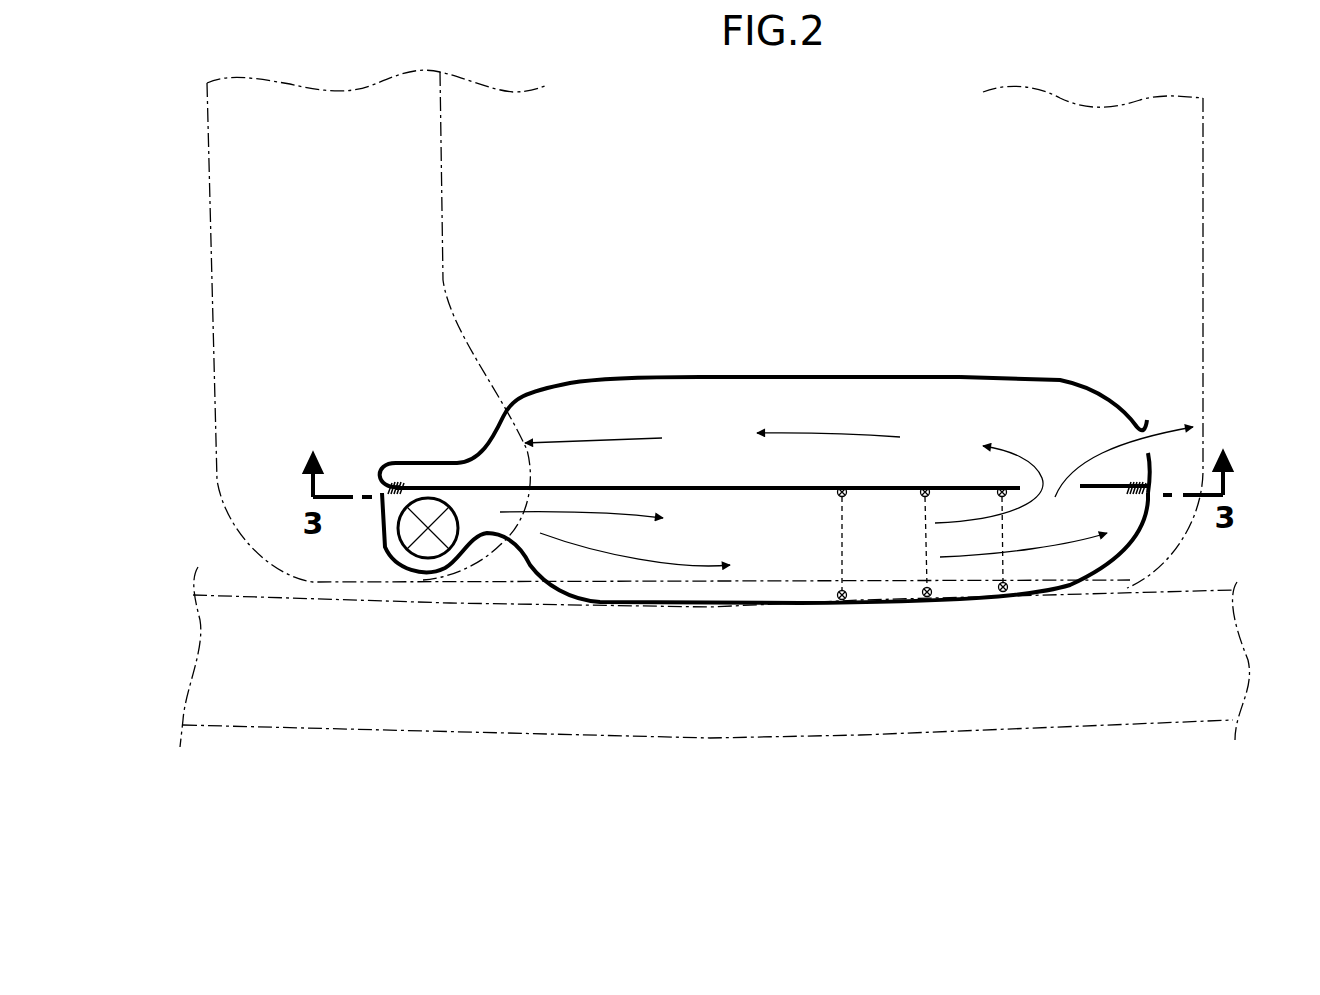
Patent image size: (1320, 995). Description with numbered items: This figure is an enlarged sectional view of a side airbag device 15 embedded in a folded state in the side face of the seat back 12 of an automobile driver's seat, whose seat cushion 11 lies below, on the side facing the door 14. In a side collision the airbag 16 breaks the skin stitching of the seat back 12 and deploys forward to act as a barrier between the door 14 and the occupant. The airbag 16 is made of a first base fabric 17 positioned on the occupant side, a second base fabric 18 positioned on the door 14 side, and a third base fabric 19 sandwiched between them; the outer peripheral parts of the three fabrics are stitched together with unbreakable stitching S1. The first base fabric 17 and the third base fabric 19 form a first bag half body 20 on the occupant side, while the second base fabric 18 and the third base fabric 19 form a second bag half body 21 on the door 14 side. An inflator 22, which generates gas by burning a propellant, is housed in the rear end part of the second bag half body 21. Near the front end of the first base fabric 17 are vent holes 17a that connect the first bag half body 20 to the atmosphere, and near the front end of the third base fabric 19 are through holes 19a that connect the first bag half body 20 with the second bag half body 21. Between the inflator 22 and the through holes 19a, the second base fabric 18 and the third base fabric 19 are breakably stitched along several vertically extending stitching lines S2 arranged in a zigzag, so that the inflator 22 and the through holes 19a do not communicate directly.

The seat cushion 11 is at (1203, 203).
The seat back 12 is at (443, 225).
The door 14 is at (905, 733).
The side airbag device 15 is at (760, 350).
The airbag 16 is at (865, 357).
The first base fabric 17 is at (962, 375).
The vent hole 17a is at (1149, 427).
The second base fabric 18 is at (798, 608).
The third base fabric 19 is at (705, 482).
The through hole 19a is at (1020, 485).
The first bag half body 20 is at (740, 426).
The second bag half body 21 is at (736, 538).
The inflator 22 is at (412, 533).
The unbreakable stitching S1 is at (400, 486).
The stitching line S2 is at (1045, 526).